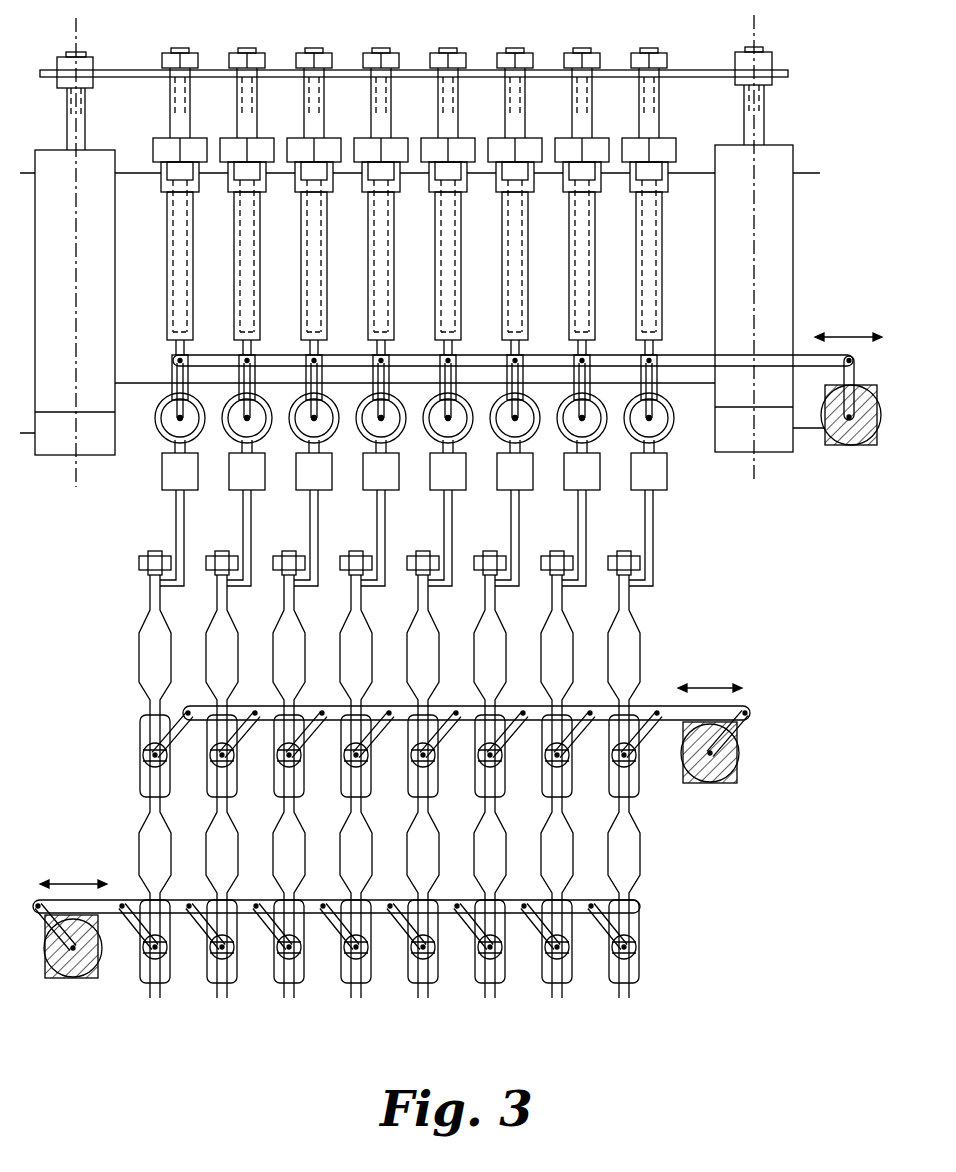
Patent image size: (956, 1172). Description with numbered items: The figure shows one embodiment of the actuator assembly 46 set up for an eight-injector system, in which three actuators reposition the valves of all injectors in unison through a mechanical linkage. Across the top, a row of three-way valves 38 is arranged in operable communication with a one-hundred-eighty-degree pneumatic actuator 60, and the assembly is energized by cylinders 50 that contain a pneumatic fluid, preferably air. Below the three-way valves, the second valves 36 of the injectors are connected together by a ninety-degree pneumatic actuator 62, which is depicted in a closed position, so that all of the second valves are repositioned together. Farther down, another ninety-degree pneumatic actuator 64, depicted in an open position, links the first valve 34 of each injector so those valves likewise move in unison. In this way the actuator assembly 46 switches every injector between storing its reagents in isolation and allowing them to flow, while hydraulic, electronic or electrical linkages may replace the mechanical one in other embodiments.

The cylinders 50 is at (105, 262).
The 3-way valve 38 is at (160, 432).
The second valve 36 is at (140, 775).
The first valve 34 is at (140, 970).
The actuator assembly 46 is at (767, 800).
The 180° pneumatic actuator 60 is at (853, 447).
The 90° pneumatic actuator 62 is at (705, 785).
The 90° pneumatic actuator 64 is at (75, 970).